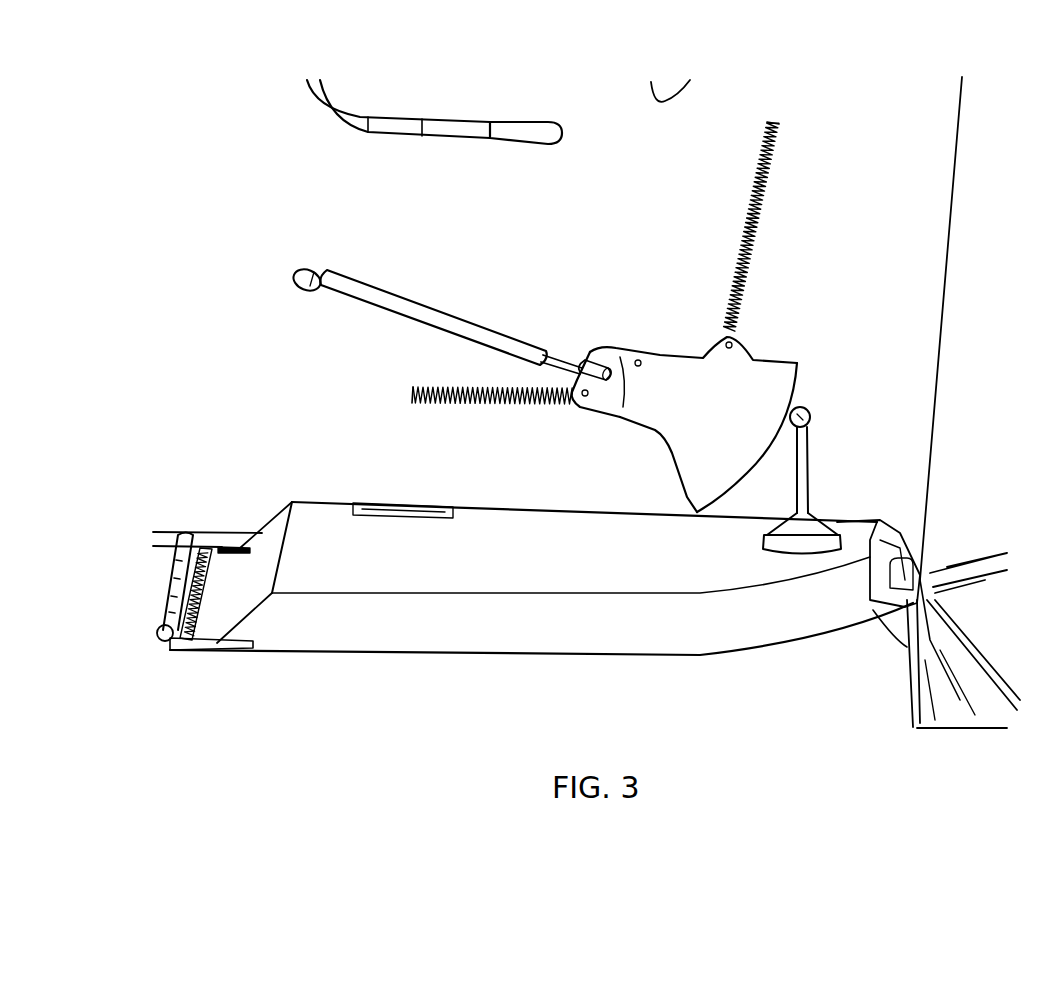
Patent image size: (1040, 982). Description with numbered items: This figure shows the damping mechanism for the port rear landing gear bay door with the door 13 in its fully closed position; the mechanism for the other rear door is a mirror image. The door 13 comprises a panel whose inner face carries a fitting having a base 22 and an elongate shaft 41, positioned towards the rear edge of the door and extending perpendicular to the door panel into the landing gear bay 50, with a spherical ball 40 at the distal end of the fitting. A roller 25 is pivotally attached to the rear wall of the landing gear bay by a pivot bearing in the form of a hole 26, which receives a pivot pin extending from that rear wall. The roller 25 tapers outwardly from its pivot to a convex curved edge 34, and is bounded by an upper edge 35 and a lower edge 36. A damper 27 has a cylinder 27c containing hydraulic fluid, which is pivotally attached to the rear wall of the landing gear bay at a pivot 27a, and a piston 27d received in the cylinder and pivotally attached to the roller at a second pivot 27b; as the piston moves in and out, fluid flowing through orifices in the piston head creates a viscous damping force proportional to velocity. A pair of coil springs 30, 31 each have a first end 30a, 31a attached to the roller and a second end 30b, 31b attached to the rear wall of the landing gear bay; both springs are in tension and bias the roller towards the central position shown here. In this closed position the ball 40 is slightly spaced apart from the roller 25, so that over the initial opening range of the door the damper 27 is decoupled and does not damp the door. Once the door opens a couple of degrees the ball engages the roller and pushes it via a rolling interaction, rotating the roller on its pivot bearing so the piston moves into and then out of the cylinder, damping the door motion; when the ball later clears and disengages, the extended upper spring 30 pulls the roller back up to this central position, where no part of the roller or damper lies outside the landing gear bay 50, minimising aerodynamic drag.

The door 13 is at (500, 527).
The base 22 is at (778, 528).
The roller 25 is at (699, 436).
The hole 26 is at (642, 368).
The damper 27 is at (474, 301).
The pivot 27a is at (308, 271).
The second pivot 27b is at (620, 350).
The cylinder 27c is at (380, 315).
The piston 27d is at (565, 356).
The coil spring 30 is at (762, 226).
The first end 30a is at (735, 338).
The second end 30b is at (773, 122).
The coil spring 31 is at (500, 405).
The first end 31a is at (582, 402).
The second end 31b is at (413, 393).
The convex curved edge 34 is at (755, 467).
The upper edge 35 is at (785, 360).
The lower edge 36 is at (670, 460).
The spherical ball 40 is at (810, 410).
The elongate shaft 41 is at (808, 476).
The landing gear bay 50 is at (567, 236).